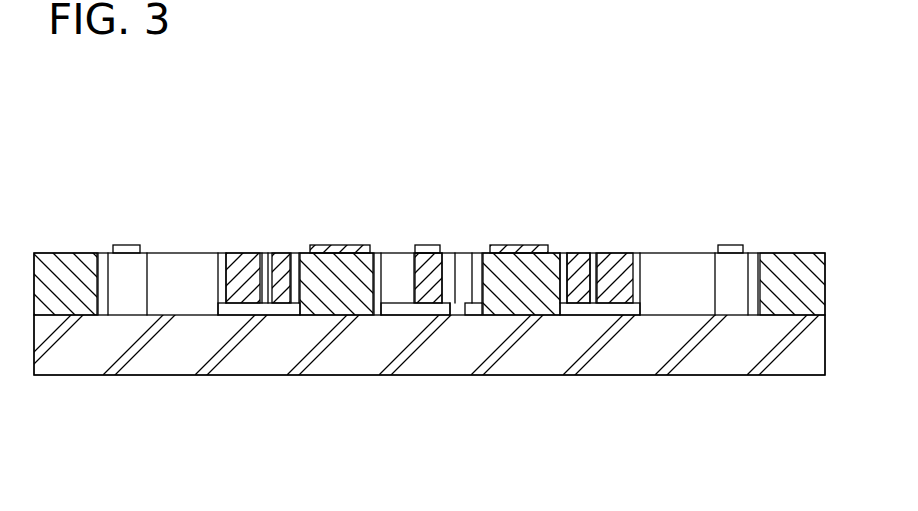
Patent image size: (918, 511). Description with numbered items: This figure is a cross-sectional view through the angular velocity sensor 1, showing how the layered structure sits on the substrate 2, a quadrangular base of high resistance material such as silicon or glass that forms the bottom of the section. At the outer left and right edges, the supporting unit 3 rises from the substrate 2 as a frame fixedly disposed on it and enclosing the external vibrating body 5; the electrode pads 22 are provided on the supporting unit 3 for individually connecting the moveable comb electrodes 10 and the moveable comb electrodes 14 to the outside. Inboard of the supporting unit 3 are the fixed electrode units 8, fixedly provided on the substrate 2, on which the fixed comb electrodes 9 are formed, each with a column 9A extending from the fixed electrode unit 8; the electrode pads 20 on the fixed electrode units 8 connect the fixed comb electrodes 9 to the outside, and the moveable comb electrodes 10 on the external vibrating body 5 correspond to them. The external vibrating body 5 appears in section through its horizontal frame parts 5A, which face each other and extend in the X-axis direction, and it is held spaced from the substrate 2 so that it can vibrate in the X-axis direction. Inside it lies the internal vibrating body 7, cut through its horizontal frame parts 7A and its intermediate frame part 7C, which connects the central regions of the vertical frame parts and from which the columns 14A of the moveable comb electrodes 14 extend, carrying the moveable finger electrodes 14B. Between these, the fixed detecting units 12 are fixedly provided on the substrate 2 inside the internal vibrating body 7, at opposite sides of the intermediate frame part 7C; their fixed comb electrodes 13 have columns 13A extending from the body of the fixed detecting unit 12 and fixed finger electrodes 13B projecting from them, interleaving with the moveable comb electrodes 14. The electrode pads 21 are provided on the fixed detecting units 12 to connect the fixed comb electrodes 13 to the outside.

The semiconductor device 1 is at (783, 235).
The substrate 2 is at (604, 365).
The supporting unit 3 is at (60, 253).
The external vibrating body 5 is at (245, 305).
The horizontal frame part 5A is at (247, 255).
The internal vibrating body 7 is at (283, 290).
The horizontal frame part 7A is at (285, 255).
The intermediate frame part 7C is at (435, 253).
The fixed electrode unit 8 is at (131, 307).
The fixed comb electrode 9 is at (168, 265).
The column 9A is at (189, 303).
The moveable comb electrode 10 is at (220, 255).
The fixed detecting unit 12 is at (318, 305).
The fixed comb electrode 13 is at (383, 310).
The column 13A is at (388, 308).
The fixed finger electrode 13B is at (405, 310).
The moveable comb electrode 14 is at (403, 265).
The column 14A is at (457, 308).
The moveable finger electrode 14B is at (382, 255).
The electrode pad 20 is at (125, 245).
The electrode pad 21 is at (325, 245).
The electrode pad 22 is at (420, 245).